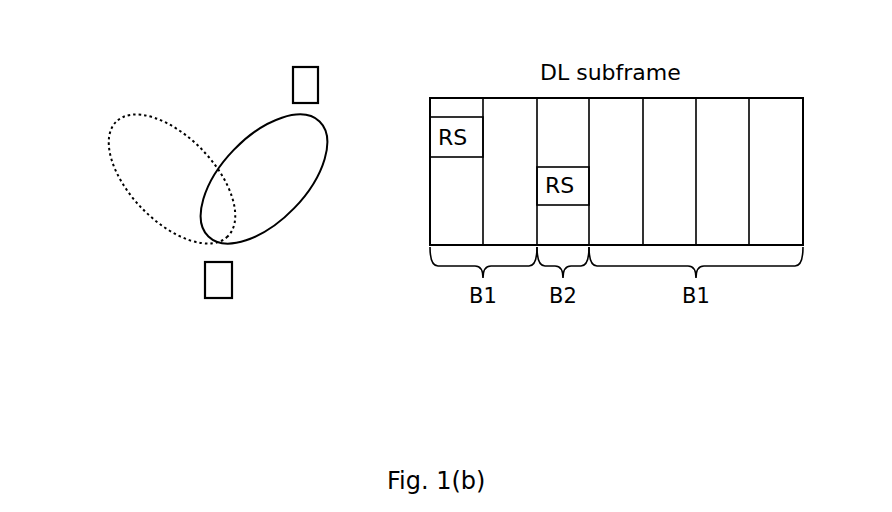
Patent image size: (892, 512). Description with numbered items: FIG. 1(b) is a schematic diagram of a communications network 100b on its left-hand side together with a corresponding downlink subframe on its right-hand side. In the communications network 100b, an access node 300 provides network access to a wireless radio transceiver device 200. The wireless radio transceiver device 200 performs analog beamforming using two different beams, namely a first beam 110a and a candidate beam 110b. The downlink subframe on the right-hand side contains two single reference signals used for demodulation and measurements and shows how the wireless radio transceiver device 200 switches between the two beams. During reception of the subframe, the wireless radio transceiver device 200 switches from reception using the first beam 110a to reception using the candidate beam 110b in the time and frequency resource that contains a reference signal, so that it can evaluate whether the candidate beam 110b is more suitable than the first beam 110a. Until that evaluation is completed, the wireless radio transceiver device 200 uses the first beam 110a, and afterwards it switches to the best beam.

The communications network 100b is at (166, 92).
The first beam 110a is at (142, 208).
The candidate beam 110b is at (295, 207).
The access node 300 is at (293, 86).
The wireless radio transceiver device 200 is at (205, 282).